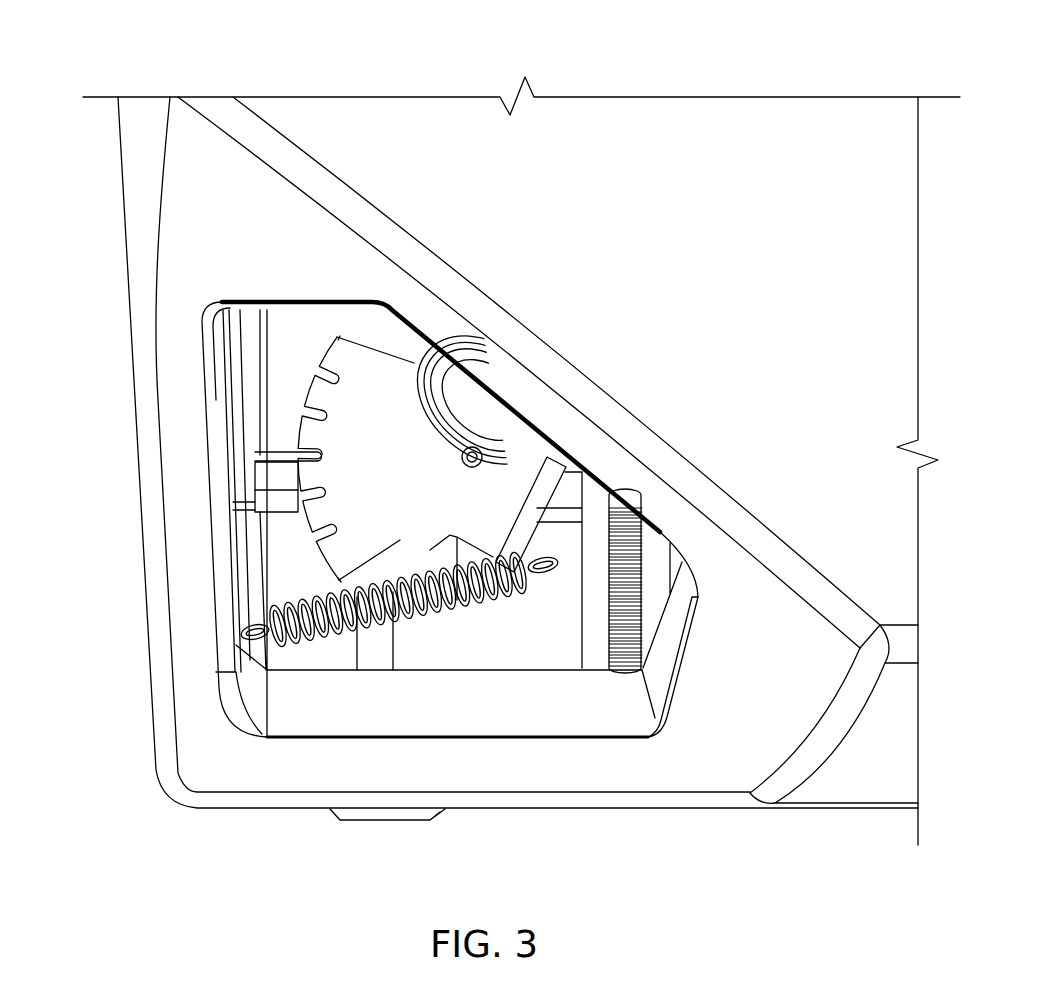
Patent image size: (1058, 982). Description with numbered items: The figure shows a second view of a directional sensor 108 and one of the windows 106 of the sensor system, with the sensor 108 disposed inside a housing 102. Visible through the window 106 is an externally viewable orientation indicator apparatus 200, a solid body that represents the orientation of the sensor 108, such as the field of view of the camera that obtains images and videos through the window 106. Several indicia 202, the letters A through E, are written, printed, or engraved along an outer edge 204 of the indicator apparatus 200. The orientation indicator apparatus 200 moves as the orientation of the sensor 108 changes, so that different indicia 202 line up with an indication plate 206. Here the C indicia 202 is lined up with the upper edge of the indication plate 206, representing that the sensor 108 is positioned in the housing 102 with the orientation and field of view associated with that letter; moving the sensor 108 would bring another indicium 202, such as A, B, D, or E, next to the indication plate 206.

The housing 102 is at (472, 127).
The window 106 is at (392, 315).
The sensor 108 is at (483, 400).
The orientation indicator apparatus 200 is at (387, 540).
The indicia 202 is at (357, 461).
The outer edge 204 is at (292, 381).
The indication plate 206 is at (270, 438).